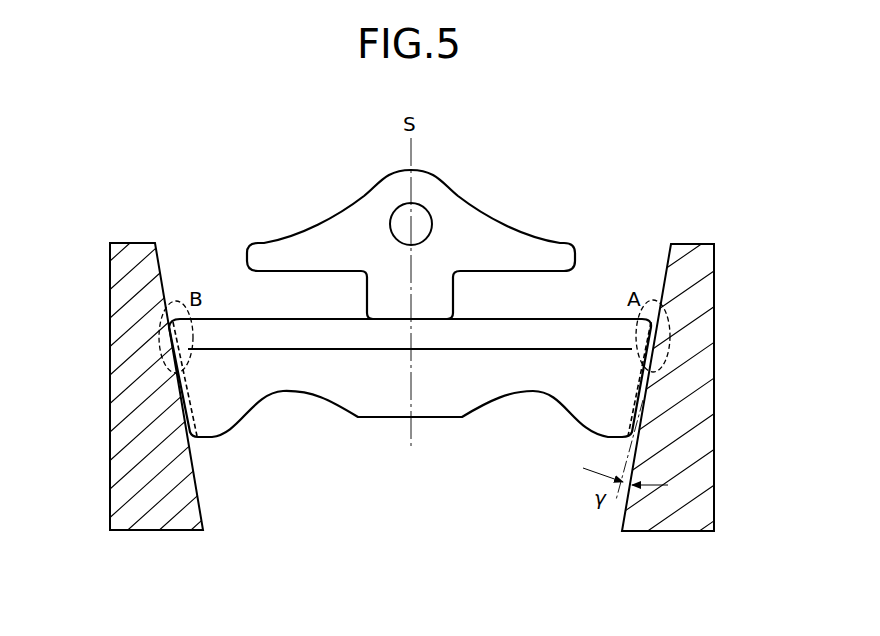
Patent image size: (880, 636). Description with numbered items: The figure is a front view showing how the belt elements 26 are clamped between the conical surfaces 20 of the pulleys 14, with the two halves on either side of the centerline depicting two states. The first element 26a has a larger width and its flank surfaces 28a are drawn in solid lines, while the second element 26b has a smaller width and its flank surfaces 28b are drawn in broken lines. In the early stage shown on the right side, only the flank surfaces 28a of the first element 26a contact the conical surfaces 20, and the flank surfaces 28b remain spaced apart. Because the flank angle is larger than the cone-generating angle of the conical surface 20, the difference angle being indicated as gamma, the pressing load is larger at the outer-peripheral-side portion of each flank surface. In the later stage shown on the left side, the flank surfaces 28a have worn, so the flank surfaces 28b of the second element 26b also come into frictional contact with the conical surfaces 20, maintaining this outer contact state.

The pulley 14 is at (191, 562).
The conical surface 20 is at (668, 270).
The element 26 is at (508, 152).
The first element 26a is at (411, 244).
The second element 26b is at (412, 368).
The flank surface 28a is at (183, 386).
The flank surface 28b is at (186, 410).